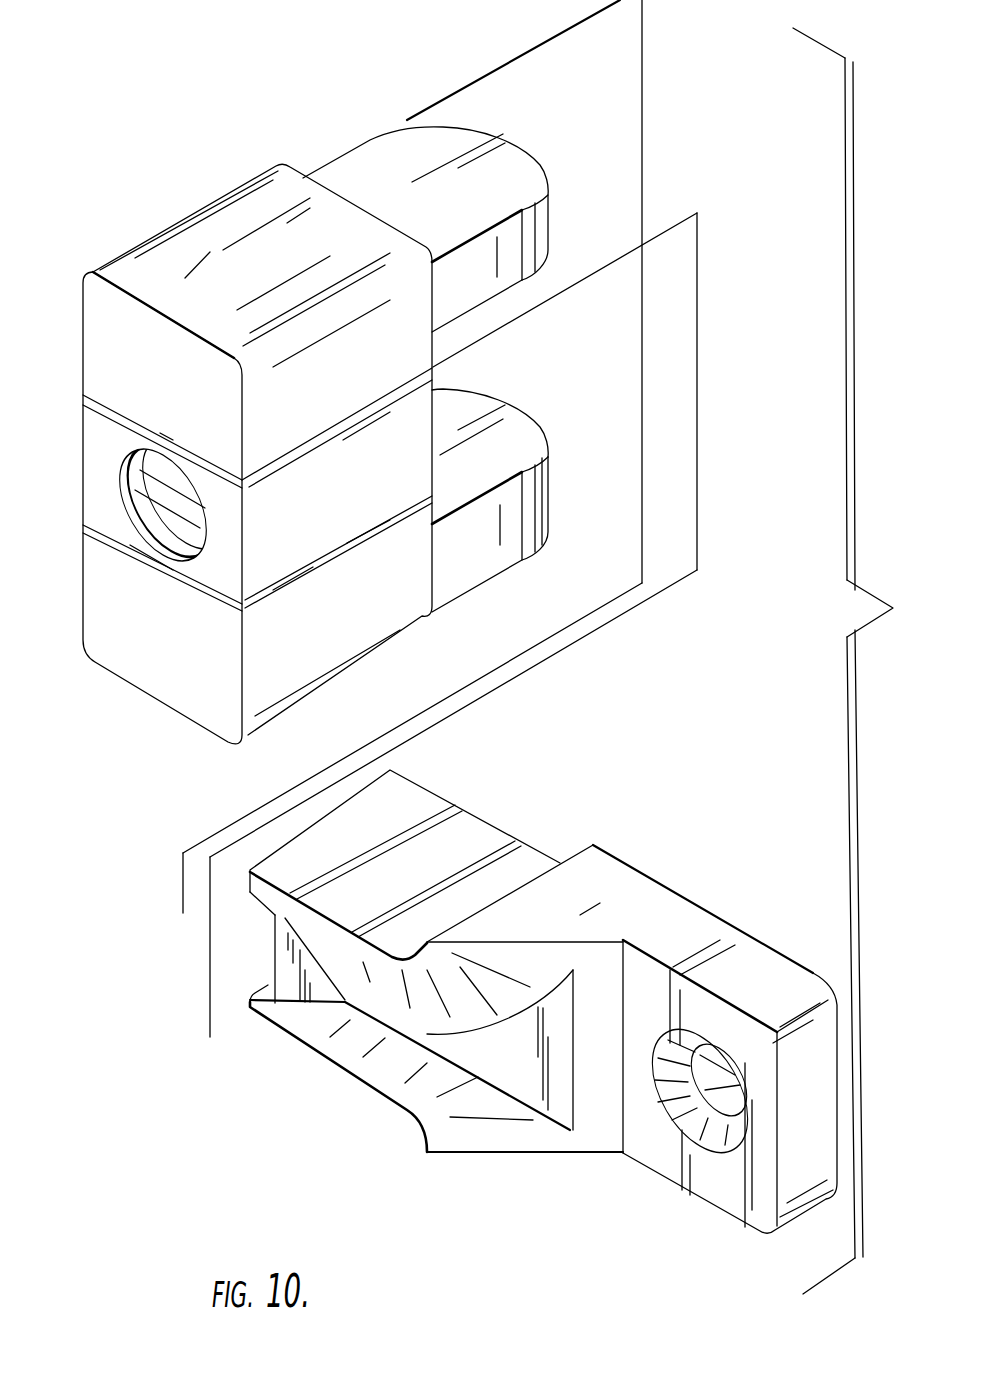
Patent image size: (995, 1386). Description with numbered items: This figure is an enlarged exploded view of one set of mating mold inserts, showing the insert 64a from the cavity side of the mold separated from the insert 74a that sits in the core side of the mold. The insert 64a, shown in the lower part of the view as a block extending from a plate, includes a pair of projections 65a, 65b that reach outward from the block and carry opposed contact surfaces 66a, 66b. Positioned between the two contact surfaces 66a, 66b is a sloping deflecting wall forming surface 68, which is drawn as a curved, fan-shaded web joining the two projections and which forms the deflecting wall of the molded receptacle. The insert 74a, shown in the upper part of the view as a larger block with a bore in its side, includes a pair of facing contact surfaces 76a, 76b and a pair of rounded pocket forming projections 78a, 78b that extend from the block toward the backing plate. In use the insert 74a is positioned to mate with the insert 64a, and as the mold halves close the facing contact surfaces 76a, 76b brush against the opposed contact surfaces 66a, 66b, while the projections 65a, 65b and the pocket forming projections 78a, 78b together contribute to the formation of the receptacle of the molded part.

The insert 64a is at (595, 1190).
The projection 65a is at (400, 800).
The projection 65b is at (373, 1070).
The contact surface 66a is at (472, 830).
The contact surface 66b is at (305, 1055).
The sloping deflecting wall forming surface 68 is at (265, 948).
The insert 74a is at (170, 735).
The contact surface 76a is at (520, 445).
The contact surface 76b is at (470, 325).
The pocket forming projection 78a is at (556, 503).
The pocket forming projection 78b is at (556, 243).